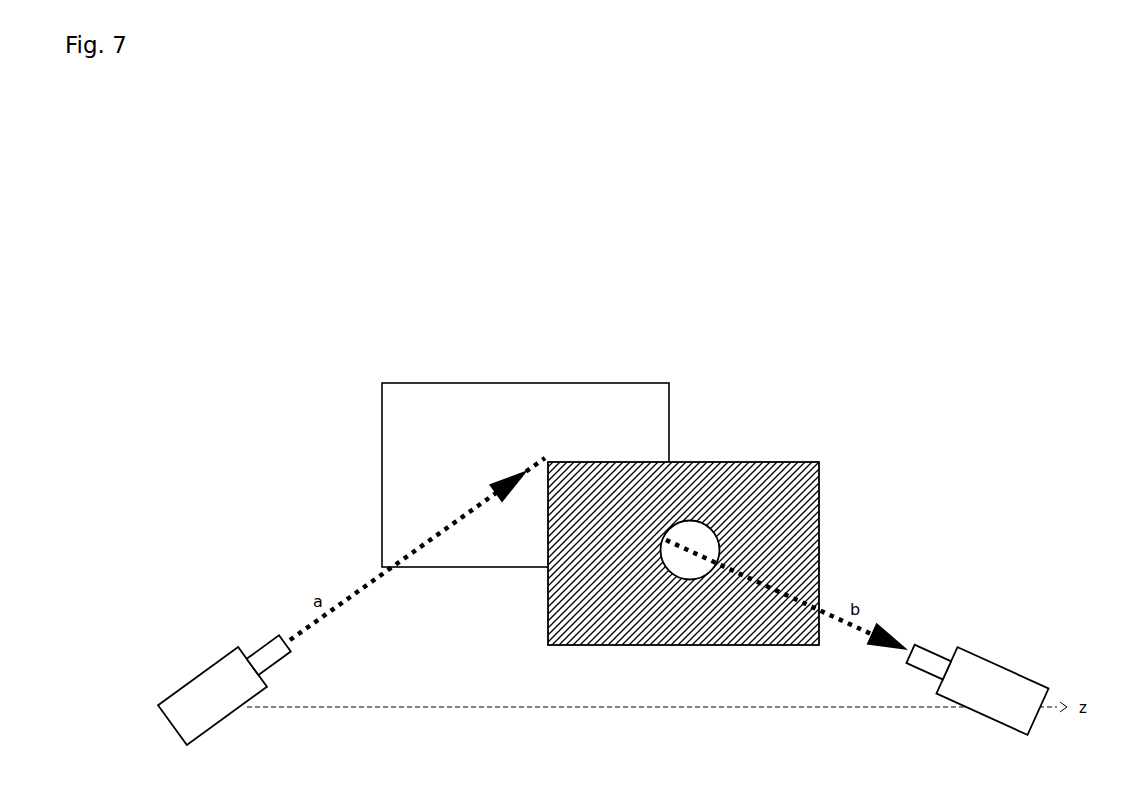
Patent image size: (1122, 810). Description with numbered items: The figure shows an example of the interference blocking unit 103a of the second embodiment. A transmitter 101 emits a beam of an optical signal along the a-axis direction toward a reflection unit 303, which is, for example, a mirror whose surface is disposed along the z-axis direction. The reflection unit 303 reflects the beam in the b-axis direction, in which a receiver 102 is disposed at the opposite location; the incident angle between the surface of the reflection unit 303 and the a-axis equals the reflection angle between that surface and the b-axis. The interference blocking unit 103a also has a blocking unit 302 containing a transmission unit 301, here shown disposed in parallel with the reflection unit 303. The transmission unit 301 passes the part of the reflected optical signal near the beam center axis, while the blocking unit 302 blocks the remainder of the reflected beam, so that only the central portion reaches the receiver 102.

The transmitter 101 is at (190, 675).
The receiver 102 is at (1015, 660).
The interference blocking unit 103a is at (711, 465).
The transmission unit 301 is at (706, 543).
The blocking unit 302 is at (773, 462).
The reflection unit 303 is at (488, 400).